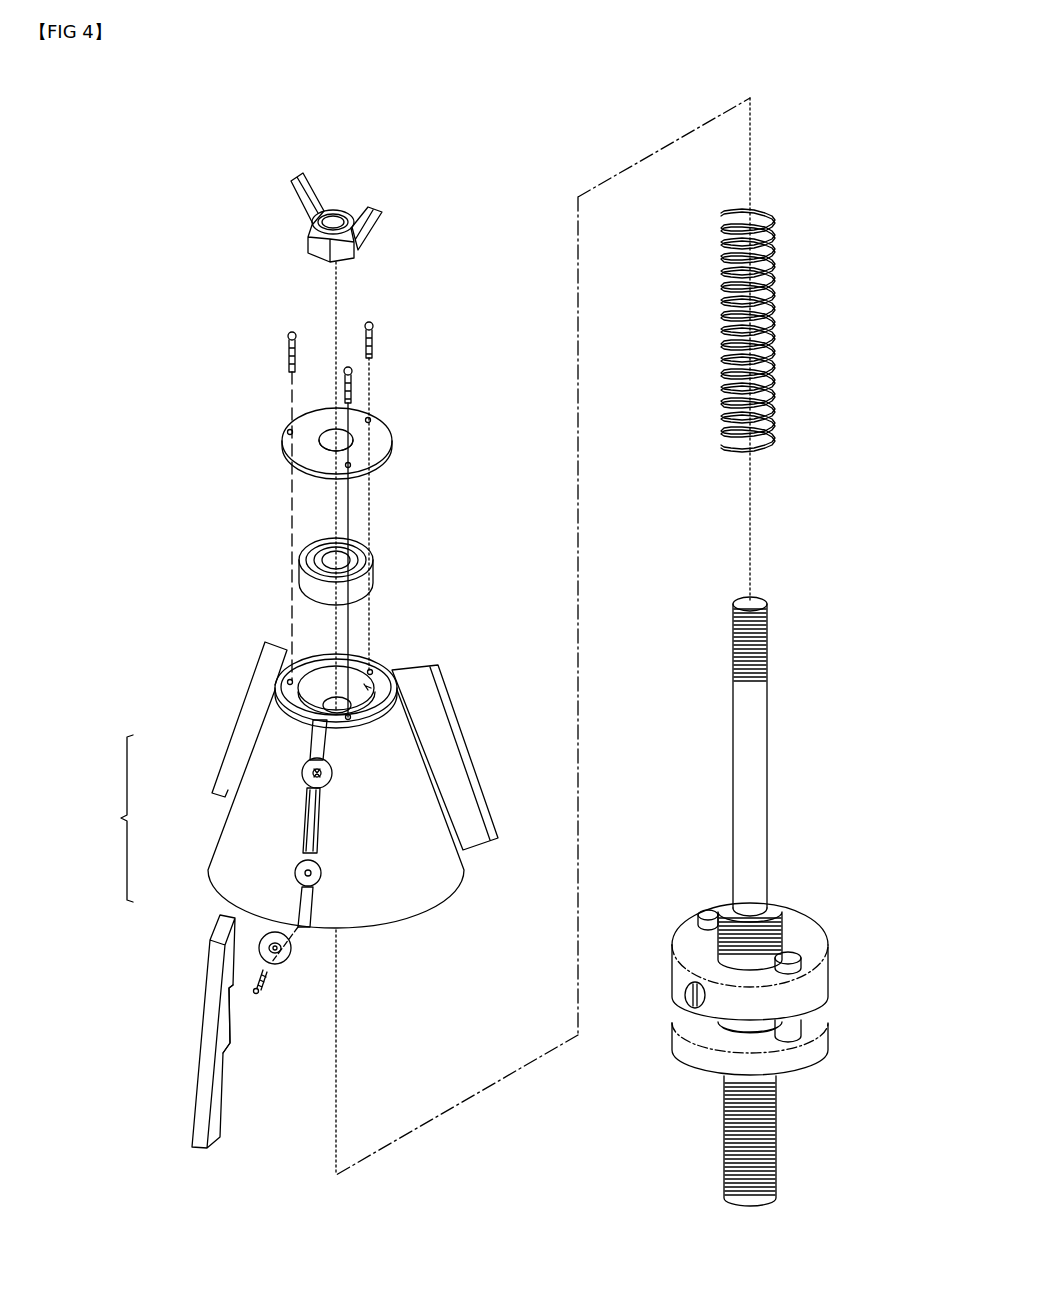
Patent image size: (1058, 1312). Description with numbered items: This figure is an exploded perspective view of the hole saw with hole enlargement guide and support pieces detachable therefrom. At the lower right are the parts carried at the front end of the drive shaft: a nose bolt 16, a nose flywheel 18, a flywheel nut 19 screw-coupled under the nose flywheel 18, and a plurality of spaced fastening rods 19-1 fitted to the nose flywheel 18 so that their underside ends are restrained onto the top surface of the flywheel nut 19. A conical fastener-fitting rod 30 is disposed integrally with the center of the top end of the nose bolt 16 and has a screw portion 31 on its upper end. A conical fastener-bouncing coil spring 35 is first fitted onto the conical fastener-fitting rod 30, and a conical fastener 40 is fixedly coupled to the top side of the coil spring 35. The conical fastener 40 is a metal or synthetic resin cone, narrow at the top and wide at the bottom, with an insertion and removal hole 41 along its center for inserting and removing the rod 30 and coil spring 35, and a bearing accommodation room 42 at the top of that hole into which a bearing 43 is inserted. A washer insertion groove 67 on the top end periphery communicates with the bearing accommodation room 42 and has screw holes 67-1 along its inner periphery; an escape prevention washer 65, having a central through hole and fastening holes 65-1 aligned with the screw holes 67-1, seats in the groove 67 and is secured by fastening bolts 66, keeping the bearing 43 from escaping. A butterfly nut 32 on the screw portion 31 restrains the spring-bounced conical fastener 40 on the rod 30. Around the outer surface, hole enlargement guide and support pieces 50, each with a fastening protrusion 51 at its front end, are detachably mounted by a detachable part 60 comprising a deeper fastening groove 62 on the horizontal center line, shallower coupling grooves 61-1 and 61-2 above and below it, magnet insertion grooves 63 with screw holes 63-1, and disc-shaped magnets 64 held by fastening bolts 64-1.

The butterfly nut 32 is at (306, 236).
The fastening bolts 66 is at (353, 388).
The escape prevention washer 65 is at (290, 450).
The fastening holes 65-1 is at (352, 463).
The bearing 43 is at (298, 578).
The conical fastener 40 is at (412, 928).
The insertion and removal hole 41 is at (337, 702).
The bearing accommodation room 42 is at (372, 686).
The washer insertion groove 67 is at (285, 700).
The screw holes 67-1 is at (372, 668).
The detachable part 60 is at (214, 879).
The coupling groove 61-1 is at (318, 742).
The coupling groove 61-2 is at (300, 905).
The fastening groove 62 is at (309, 820).
The magnet insertion grooves 63 is at (300, 866).
The screw holes 63-1 is at (304, 874).
The disc-shaped magnets 64 is at (312, 783).
The fastening bolts 64-1 is at (305, 772).
The hole enlargement guide and support pieces 50 is at (266, 641).
The fastening protrusion 51 is at (231, 1022).
The conical fastener-bouncing coil spring 35 is at (779, 322).
The conical fastener-fitting rod 30 is at (752, 794).
The screw portion 31 is at (768, 638).
The nose flywheel 18 is at (822, 985).
The flywheel nut 19 is at (688, 1053).
The fastening rods 19-1 is at (708, 910).
The nose bolt 16 is at (778, 1138).